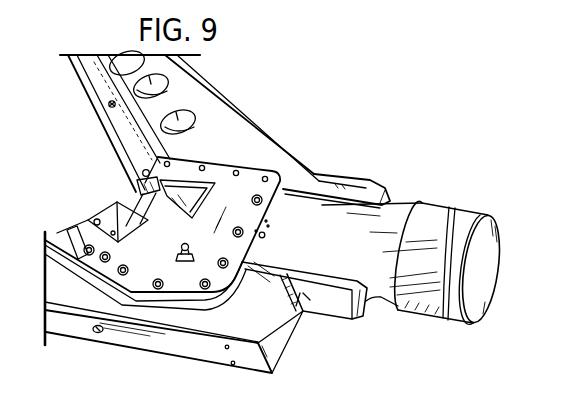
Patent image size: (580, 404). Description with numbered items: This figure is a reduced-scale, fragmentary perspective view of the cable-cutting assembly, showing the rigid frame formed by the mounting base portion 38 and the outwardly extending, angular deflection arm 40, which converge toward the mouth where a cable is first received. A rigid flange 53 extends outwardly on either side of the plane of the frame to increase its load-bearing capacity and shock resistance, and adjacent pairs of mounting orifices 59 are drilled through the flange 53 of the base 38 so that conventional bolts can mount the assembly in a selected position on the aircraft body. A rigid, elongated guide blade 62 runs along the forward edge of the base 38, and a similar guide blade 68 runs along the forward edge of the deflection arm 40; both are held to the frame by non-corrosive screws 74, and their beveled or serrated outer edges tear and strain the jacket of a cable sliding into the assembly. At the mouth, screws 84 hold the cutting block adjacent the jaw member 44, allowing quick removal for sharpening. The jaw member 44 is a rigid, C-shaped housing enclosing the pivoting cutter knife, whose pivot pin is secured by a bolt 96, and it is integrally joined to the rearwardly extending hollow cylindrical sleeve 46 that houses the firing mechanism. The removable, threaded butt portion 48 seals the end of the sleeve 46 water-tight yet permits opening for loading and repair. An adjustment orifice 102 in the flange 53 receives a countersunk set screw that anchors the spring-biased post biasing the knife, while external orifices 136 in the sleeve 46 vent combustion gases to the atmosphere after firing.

The deflection arm 40 is at (190, 91).
The screws 74 is at (111, 102).
The guide blade 68 is at (97, 104).
The flange 53 is at (306, 169).
The guide blade 62 is at (57, 233).
The screws 84 is at (111, 222).
The jaw member 44 is at (162, 229).
The bolt 96 is at (190, 253).
The external orifices 136 is at (262, 235).
The sleeve 46 is at (374, 254).
The butt portion 48 is at (450, 263).
The mounting base portion 38 is at (174, 302).
The adjustment orifice 102 is at (100, 335).
The mounting orifices 59 is at (233, 363).